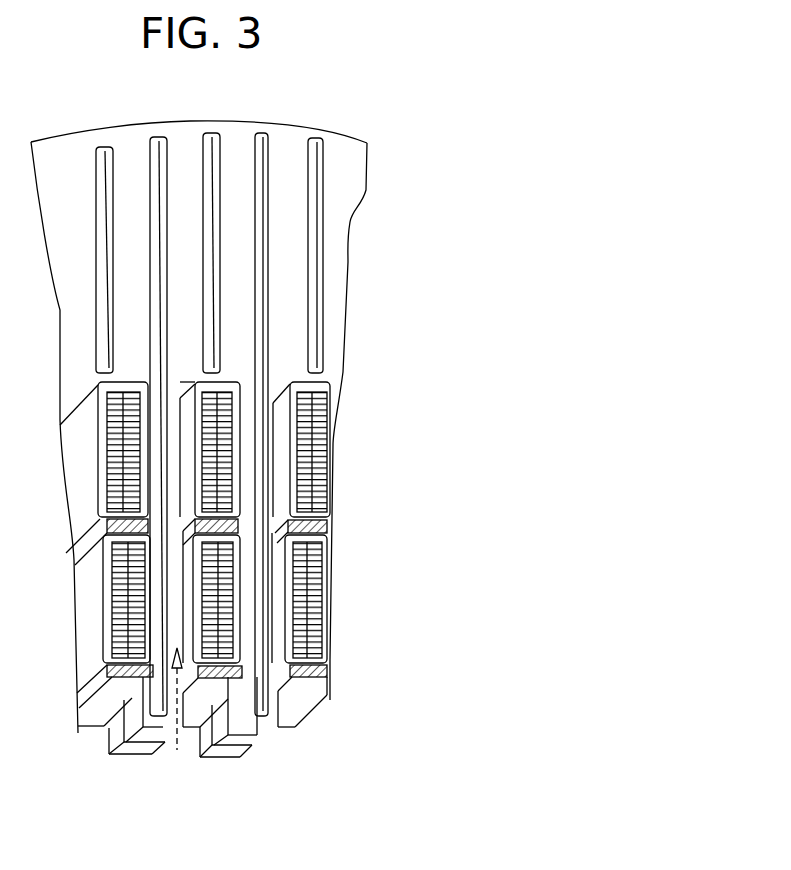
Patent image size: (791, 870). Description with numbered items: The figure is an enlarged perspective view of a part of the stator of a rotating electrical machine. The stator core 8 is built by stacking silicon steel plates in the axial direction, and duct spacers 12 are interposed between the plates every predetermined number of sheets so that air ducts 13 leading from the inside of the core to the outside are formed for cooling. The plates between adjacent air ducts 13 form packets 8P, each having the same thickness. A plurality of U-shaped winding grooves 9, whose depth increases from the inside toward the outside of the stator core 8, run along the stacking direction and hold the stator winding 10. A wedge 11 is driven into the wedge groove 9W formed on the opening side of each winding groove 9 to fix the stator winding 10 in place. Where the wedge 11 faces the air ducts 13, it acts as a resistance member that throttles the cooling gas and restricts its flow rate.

The stator core 8 is at (330, 298).
The packet 8P is at (135, 745).
The winding groove 9 is at (340, 381).
The wedge groove 9W is at (263, 688).
The stator winding 10 is at (317, 602).
The wedge 11 is at (298, 700).
The duct spacer 12 is at (168, 153).
The air duct 13 is at (227, 740).